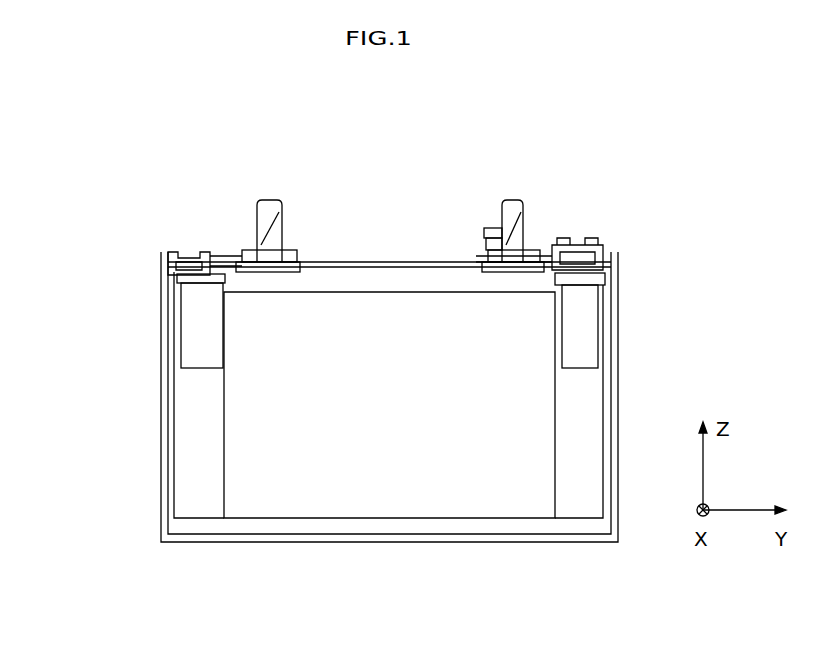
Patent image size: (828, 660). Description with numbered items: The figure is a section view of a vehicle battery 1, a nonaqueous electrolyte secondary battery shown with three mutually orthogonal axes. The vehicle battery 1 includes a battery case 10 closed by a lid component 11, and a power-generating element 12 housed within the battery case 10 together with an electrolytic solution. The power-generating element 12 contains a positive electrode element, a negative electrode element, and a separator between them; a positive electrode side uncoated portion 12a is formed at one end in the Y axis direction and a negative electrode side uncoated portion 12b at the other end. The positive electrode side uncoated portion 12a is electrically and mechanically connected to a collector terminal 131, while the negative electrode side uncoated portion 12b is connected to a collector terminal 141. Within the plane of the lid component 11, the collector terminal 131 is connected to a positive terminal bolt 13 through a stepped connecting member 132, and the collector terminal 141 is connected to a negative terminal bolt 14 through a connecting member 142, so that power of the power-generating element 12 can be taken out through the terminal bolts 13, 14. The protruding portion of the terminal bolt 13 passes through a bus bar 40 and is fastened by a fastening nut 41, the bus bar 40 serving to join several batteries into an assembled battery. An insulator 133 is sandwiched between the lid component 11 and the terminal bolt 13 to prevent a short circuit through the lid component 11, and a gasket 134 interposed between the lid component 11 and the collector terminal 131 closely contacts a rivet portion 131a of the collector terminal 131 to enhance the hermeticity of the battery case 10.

The vehicle battery 1 is at (141, 393).
The battery case 10 is at (284, 540).
The lid component 11 is at (361, 262).
The power-generating element 12 is at (421, 492).
The positive electrode side uncoated portion 12a is at (576, 500).
The negative electrode side uncoated portion 12b is at (201, 500).
The terminal bolt (positive electrode) 13 is at (512, 226).
The collector terminal (positive electrode) 131 is at (584, 331).
The rivet portion 131a is at (603, 254).
The connecting member (positive electrode) 132 is at (556, 247).
The insulator 133 is at (486, 258).
The gasket 134 is at (616, 265).
The terminal bolt (negative electrode) 14 is at (267, 225).
The collector terminal (negative electrode) 141 is at (196, 330).
The connecting member (negative electrode) 142 is at (178, 252).
The bus bar 40 is at (492, 240).
The fastening nut 41 is at (496, 230).